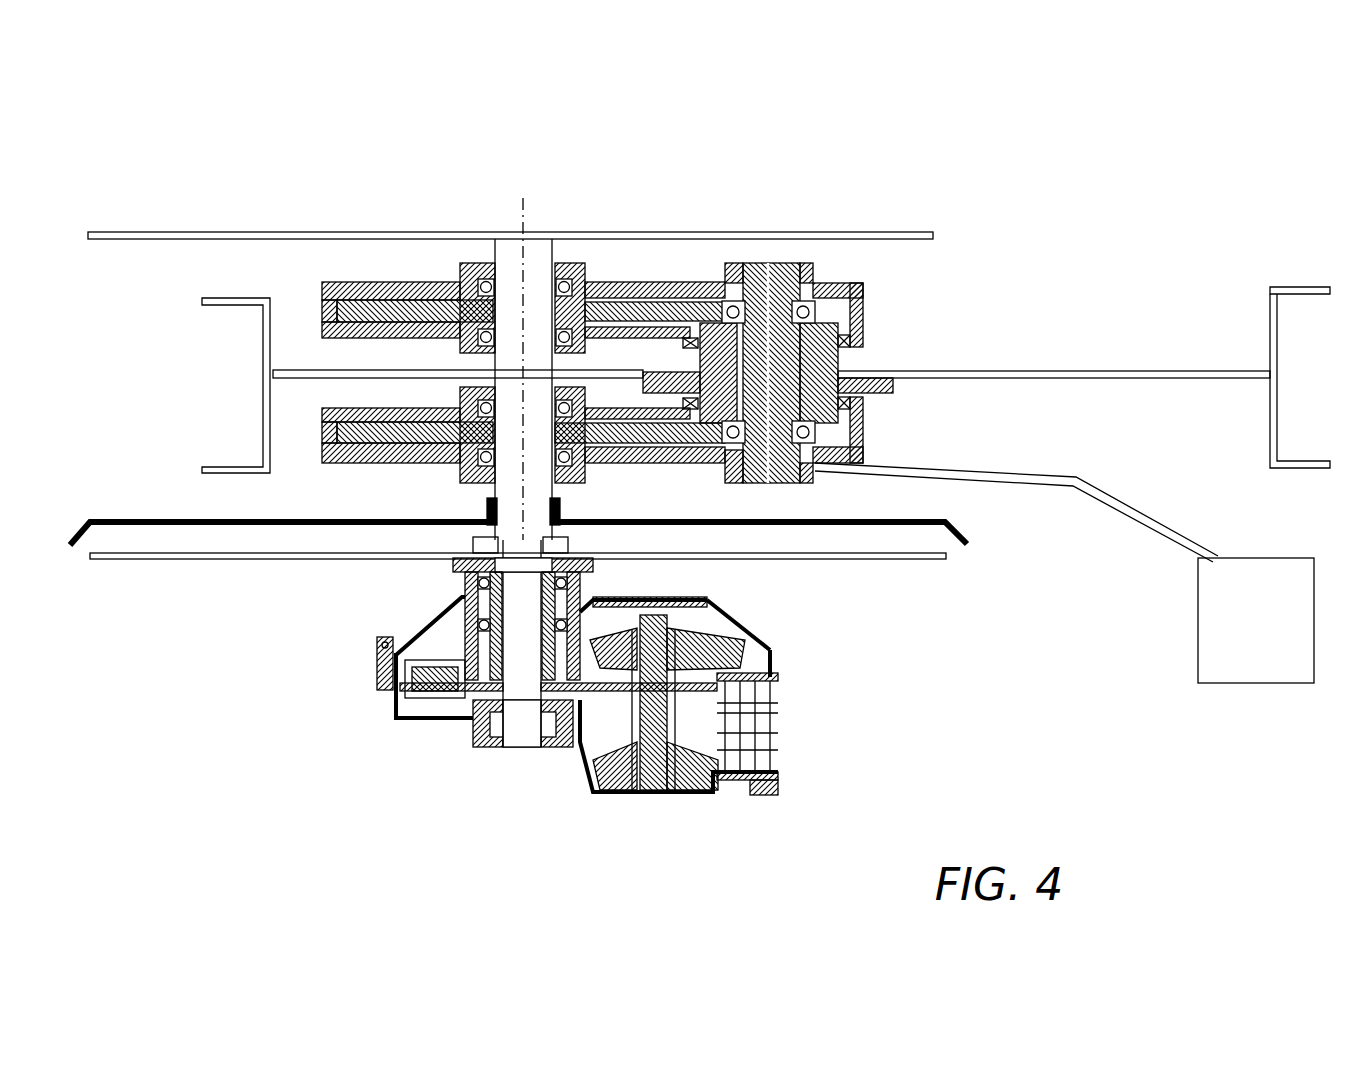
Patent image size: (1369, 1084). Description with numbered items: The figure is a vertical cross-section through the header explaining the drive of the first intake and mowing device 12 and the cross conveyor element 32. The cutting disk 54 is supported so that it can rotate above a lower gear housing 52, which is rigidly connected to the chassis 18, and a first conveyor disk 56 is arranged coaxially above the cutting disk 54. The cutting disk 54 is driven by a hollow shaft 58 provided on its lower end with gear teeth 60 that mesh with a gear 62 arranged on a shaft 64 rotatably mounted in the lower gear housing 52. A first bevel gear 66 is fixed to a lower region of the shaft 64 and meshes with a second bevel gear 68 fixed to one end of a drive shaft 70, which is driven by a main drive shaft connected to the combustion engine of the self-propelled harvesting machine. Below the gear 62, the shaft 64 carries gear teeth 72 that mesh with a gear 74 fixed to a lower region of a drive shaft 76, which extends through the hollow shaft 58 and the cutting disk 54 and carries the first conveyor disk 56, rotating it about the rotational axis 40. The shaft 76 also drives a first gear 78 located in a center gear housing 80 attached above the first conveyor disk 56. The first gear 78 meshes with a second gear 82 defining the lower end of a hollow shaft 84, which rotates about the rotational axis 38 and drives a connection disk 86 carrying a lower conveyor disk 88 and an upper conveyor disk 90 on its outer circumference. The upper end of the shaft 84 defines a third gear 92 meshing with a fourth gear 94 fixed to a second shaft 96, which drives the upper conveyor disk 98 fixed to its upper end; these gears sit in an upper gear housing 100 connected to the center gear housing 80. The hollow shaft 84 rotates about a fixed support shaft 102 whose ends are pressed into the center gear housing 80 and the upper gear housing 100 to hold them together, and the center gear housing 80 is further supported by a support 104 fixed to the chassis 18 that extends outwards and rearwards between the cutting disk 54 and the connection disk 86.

The first intake and mowing device 12 is at (238, 222).
The chassis 18 is at (1296, 652).
The cross conveyor element 32 is at (1084, 353).
The rotational axis 38 is at (770, 262).
The rotational axis 40 is at (520, 210).
The lower gear housing 52 is at (593, 793).
The cutting disk 54 is at (890, 560).
The first conveyor disk 56 is at (80, 520).
The hollow shaft 58 is at (460, 579).
The gear teeth 60 is at (493, 660).
The gear 62 is at (762, 650).
The shaft 64 is at (650, 797).
The bevel gear 66 is at (703, 797).
The upper bevel gear 68 is at (767, 700).
The drive shaft 70 is at (707, 712).
The gear teeth 72 is at (768, 703).
The gear 74 is at (420, 720).
The drive shaft 76 is at (533, 747).
The first gear 78 is at (397, 437).
The center gear housing 80 is at (625, 453).
The second gear 82 is at (813, 447).
The hollow shaft 84 is at (862, 355).
The connection disk 86 is at (946, 372).
The lower conveyor disk 88 is at (1285, 470).
The upper conveyor disk 90 is at (1320, 290).
The third gear 92 is at (818, 313).
The fourth gear 94 is at (643, 298).
The second shaft 96 is at (557, 258).
The upper conveyor disk 98 is at (710, 236).
The upper gear housing 100 is at (410, 293).
The fixed support shaft 102 is at (808, 462).
The support 104 is at (1015, 482).